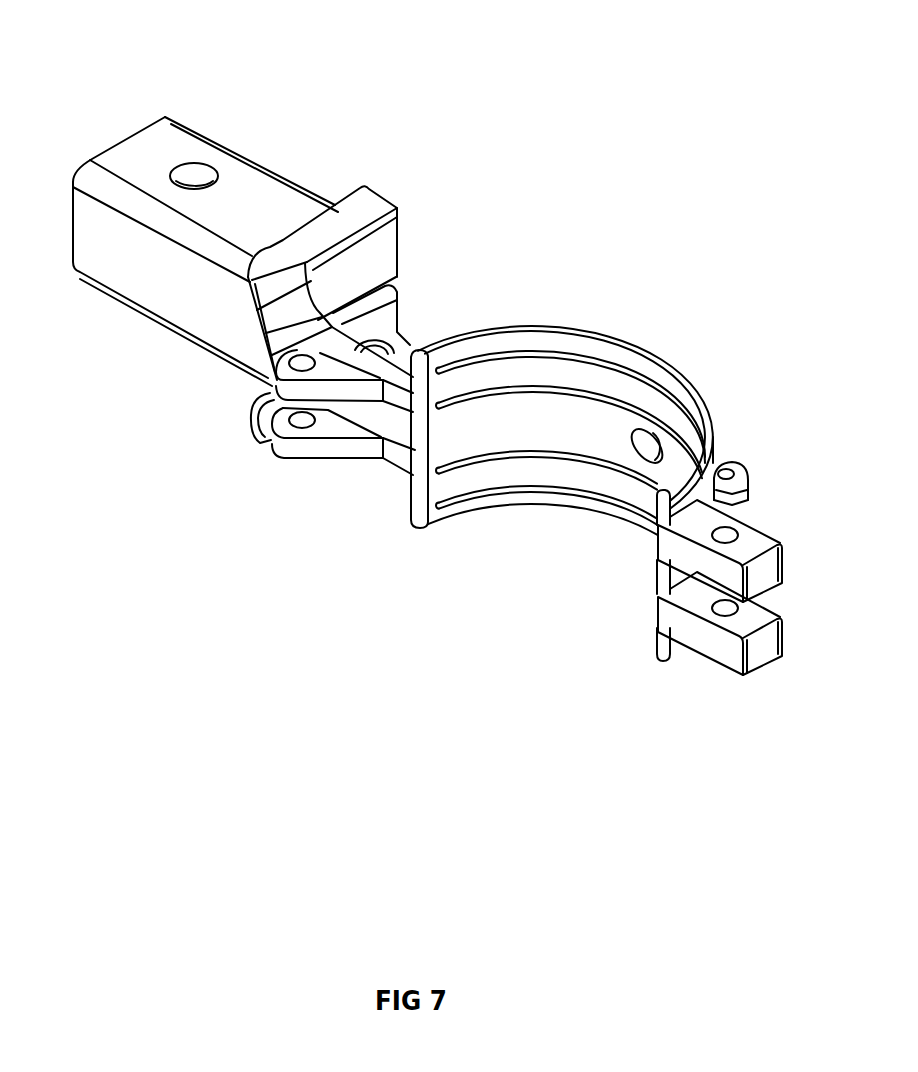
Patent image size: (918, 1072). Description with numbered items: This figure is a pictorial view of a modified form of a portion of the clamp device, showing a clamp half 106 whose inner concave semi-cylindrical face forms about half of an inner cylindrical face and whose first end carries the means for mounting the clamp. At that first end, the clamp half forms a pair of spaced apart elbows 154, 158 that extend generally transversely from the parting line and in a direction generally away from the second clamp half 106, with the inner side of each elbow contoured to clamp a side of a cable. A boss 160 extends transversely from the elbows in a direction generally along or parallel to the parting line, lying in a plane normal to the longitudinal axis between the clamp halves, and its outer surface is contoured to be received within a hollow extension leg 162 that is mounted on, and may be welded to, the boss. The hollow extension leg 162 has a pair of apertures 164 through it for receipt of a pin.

The clamp half 106 is at (600, 330).
The elbow 154 is at (318, 266).
The elbow 158 is at (388, 324).
The boss 160 is at (272, 216).
The hollow extension leg 162 is at (219, 143).
The aperture 164 is at (178, 175).